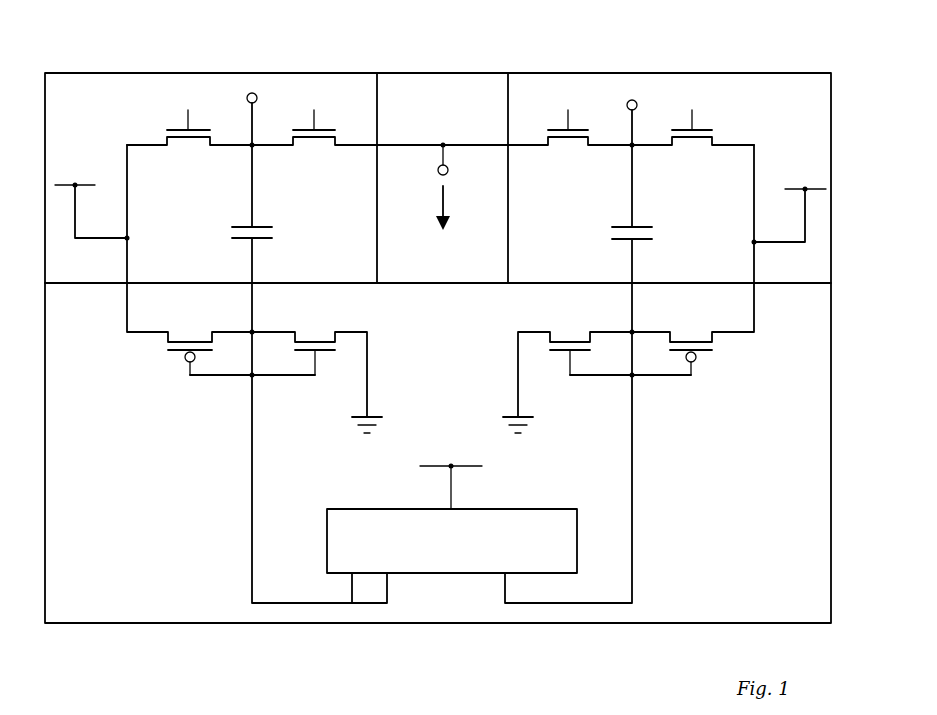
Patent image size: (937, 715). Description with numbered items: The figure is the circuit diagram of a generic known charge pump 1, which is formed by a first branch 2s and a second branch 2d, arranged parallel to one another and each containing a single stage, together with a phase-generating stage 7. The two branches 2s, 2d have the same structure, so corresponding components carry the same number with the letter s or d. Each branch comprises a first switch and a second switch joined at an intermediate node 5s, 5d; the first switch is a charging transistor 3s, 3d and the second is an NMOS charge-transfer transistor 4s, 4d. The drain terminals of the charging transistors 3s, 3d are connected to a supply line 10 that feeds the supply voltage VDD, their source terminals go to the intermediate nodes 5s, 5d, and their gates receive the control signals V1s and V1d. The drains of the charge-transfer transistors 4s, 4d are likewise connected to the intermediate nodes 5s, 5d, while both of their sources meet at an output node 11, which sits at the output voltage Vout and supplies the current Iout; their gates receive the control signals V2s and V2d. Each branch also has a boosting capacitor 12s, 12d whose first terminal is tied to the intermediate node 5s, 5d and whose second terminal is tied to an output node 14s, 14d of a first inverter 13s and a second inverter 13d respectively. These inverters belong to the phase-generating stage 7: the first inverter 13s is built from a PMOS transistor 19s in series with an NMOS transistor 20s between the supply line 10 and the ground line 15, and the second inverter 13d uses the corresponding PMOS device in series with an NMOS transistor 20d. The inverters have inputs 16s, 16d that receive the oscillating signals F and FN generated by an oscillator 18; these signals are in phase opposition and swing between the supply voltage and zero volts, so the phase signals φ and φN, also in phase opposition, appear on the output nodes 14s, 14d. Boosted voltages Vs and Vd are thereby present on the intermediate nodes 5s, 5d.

The charge pump 1 is at (762, 64).
The first branch 2s is at (93, 83).
The second branch 2d is at (663, 90).
The charging transistor 3s is at (186, 140).
The charging transistor 3d is at (688, 140).
The charge-transfer transistor 4s is at (313, 140).
The charge-transfer transistor 4d is at (568, 140).
The intermediate node 5s is at (251, 145).
The intermediate node 5d is at (631, 143).
The phase-generating stage 7 is at (361, 604).
The supply line 10 is at (75, 185).
The output node 11 is at (440, 145).
The boosting capacitor 12s is at (283, 231).
The boosting capacitor 12d is at (612, 228).
The first inverter 13s is at (116, 365).
The second inverter 13d is at (710, 395).
The output node 14s is at (251, 332).
The output node 14d is at (633, 332).
The ground line 15 is at (378, 416).
The input 16s is at (251, 376).
The input 16d is at (631, 376).
The oscillator 18 is at (367, 513).
The PMOS transistor 19s is at (182, 338).
The NMOS transistor 20s is at (317, 340).
The NMOS transistor 20d is at (556, 337).